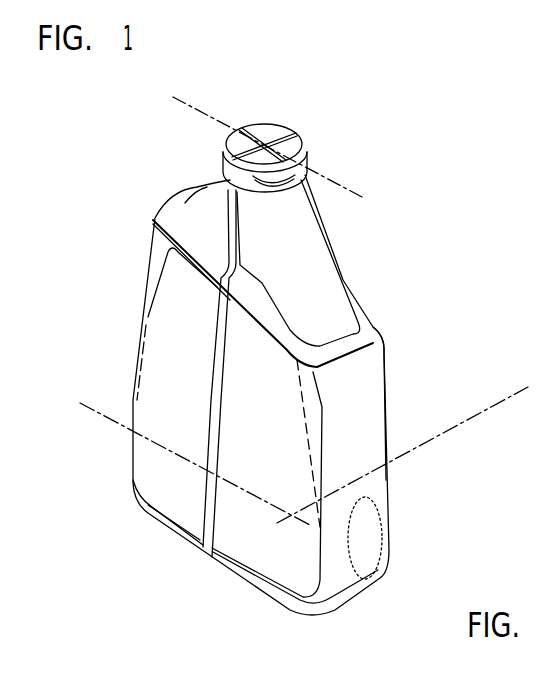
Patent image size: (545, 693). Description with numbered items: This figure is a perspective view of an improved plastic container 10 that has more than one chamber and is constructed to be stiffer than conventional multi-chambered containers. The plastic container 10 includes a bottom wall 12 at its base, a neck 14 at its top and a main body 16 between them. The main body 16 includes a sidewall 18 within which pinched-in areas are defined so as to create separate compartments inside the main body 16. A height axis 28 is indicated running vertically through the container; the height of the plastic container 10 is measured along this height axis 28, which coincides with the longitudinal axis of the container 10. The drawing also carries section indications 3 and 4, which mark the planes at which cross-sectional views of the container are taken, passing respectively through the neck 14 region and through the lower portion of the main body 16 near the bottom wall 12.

The plastic container 10 is at (156, 559).
The bottom wall 12 is at (225, 573).
The neck 14 is at (252, 169).
The main body 16 is at (418, 391).
The sidewall 18 is at (383, 358).
The height axis 28 is at (263, 143).
The section line 3- 3 is at (195, 98).
The section line 4- 4 is at (93, 418).